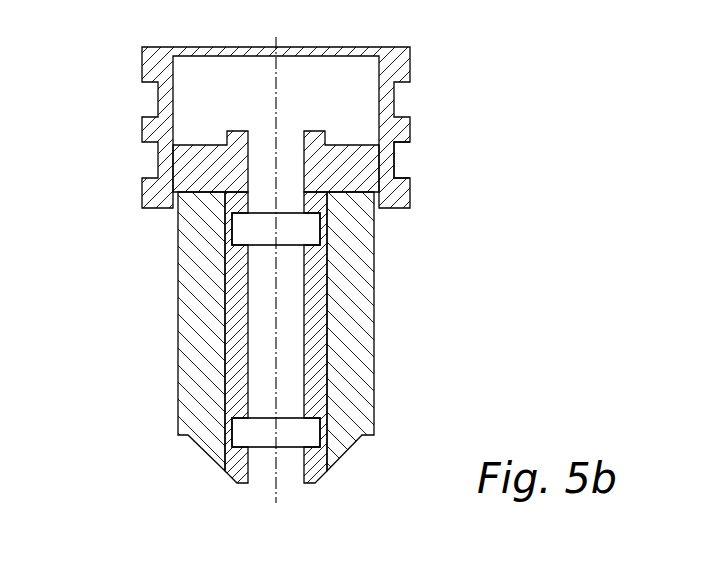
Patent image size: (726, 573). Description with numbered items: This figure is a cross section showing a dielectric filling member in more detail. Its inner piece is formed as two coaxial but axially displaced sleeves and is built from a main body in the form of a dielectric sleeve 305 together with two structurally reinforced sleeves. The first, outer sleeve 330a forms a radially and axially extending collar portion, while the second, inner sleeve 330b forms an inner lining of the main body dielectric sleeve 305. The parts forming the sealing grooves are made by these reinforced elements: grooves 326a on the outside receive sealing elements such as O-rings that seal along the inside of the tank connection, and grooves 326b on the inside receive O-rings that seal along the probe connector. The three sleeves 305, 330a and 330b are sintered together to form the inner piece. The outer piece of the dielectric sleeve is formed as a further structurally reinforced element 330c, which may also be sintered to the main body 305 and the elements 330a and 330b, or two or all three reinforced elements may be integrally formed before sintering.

The dielectric sleeve 305 is at (348, 407).
The outer sleeve 330a is at (395, 73).
The inner sleeve 330b is at (313, 273).
The structurally reinforced element 330c is at (205, 152).
The grooves 326a is at (400, 163).
The grooves 326b is at (233, 233).